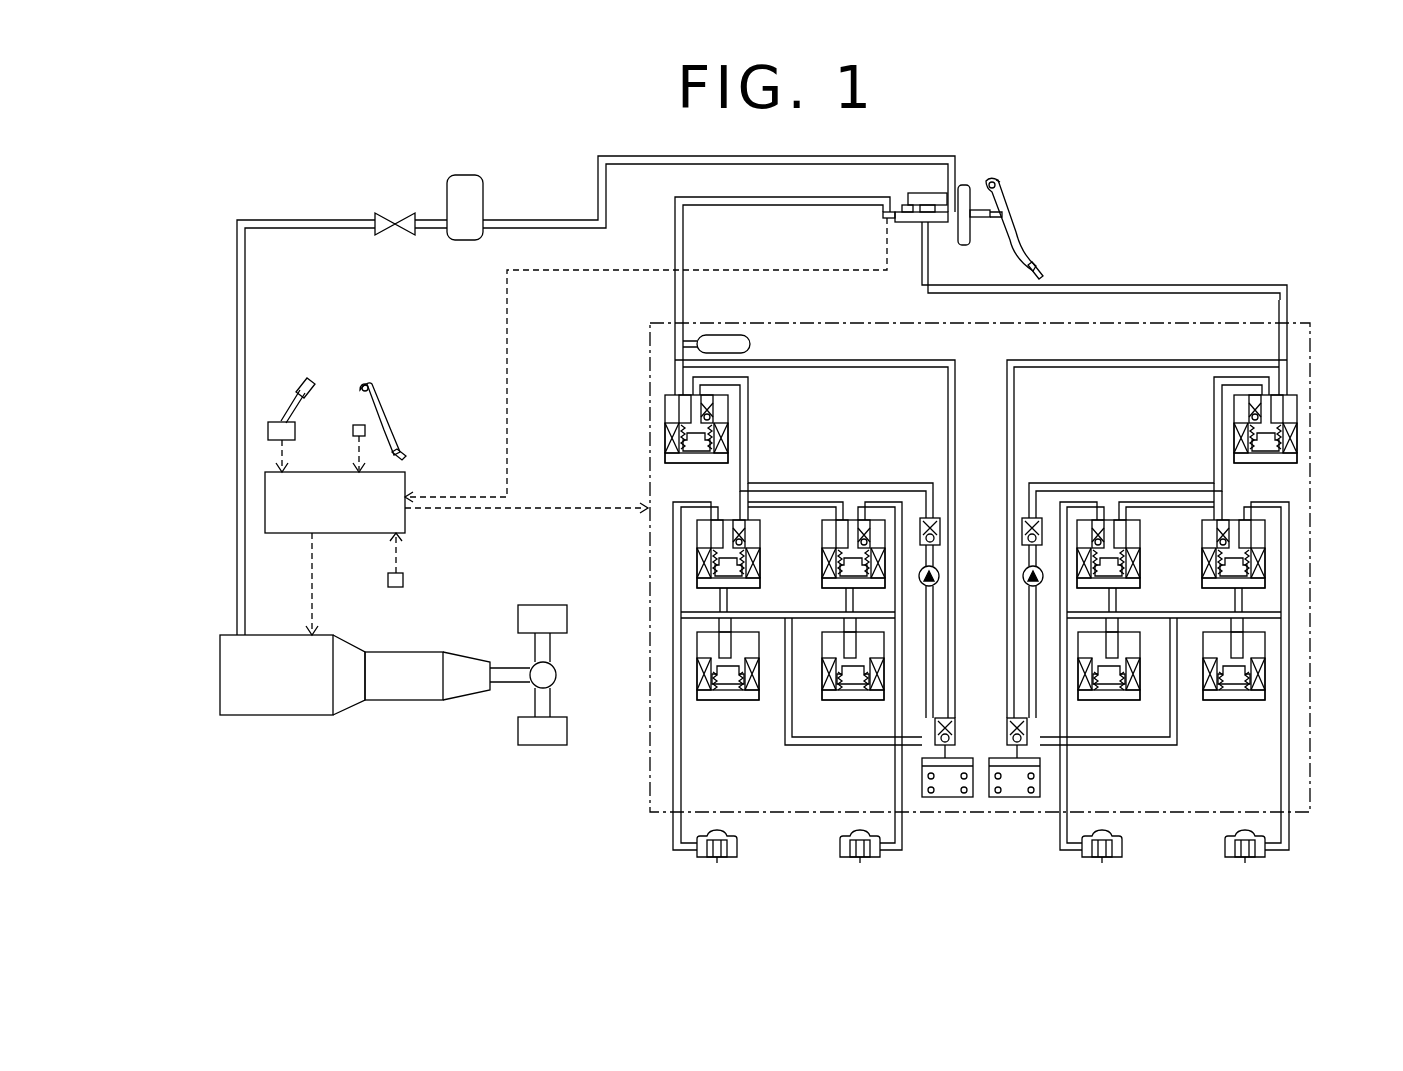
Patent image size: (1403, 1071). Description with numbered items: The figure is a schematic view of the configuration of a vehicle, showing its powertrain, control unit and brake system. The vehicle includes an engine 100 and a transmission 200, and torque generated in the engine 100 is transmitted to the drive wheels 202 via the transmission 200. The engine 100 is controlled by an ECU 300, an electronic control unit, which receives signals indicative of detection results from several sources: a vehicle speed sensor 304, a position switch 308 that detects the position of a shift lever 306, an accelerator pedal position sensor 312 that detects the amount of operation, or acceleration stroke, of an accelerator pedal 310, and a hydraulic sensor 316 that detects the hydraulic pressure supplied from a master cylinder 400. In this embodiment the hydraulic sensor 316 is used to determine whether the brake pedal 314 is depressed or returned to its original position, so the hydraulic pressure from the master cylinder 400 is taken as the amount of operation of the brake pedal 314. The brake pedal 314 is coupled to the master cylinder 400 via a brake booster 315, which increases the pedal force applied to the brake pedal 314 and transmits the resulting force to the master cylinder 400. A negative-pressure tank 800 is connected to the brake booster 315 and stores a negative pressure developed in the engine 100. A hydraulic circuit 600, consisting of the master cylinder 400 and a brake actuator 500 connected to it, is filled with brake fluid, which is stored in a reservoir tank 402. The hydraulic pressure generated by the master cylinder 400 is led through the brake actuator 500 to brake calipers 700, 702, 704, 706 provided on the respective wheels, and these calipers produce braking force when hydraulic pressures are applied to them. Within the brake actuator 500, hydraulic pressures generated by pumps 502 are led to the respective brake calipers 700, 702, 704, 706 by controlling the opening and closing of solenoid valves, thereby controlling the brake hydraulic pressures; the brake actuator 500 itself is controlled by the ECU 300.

The engine 100 is at (293, 717).
The transmission 200 is at (400, 700).
The drive wheels 202 is at (535, 603).
The ECU 300 is at (350, 535).
The vehicle speed sensor 304 is at (405, 584).
The shift lever 306 is at (305, 383).
The position switch 308 is at (297, 430).
The accelerator pedal 310 is at (380, 408).
The accelerator pedal position sensor 312 is at (309, 456).
The brake pedal 314 is at (1017, 242).
The brake booster 315 is at (975, 182).
The hydraulic sensor 316 is at (887, 222).
The master cylinder 400 is at (940, 223).
The reservoir tank 402 is at (903, 193).
The brake actuator 500 is at (932, 575).
The pumps 502 is at (939, 572).
The hydraulic circuit 600 is at (1198, 242).
The brake caliper 700 is at (1225, 848).
The brake caliper 702 is at (1122, 838).
The brake caliper 704 is at (840, 848).
The brake caliper 706 is at (737, 838).
The negative-pressure tank 800 is at (445, 190).